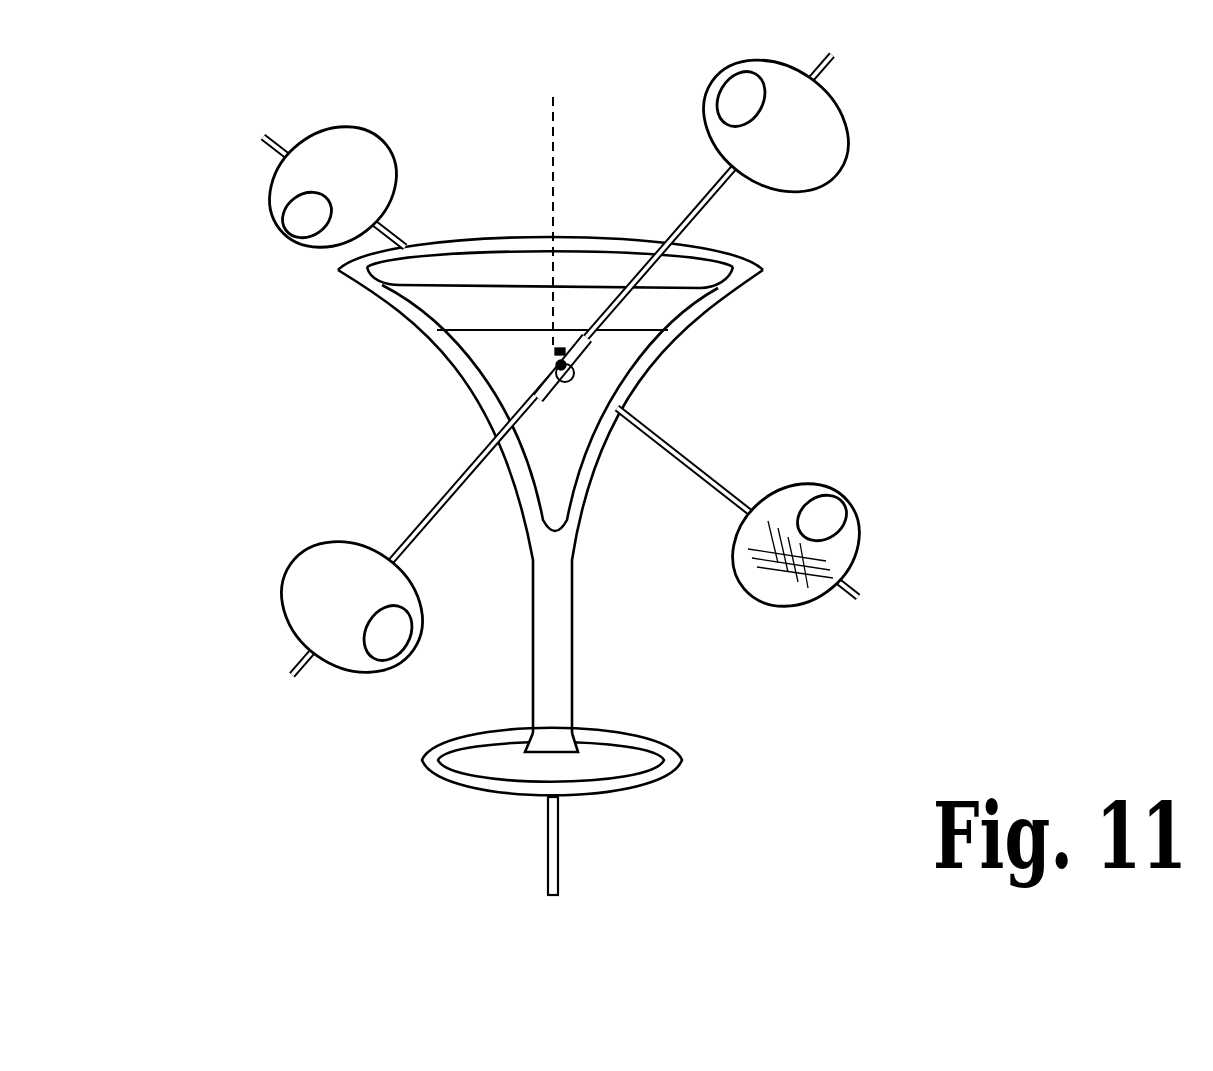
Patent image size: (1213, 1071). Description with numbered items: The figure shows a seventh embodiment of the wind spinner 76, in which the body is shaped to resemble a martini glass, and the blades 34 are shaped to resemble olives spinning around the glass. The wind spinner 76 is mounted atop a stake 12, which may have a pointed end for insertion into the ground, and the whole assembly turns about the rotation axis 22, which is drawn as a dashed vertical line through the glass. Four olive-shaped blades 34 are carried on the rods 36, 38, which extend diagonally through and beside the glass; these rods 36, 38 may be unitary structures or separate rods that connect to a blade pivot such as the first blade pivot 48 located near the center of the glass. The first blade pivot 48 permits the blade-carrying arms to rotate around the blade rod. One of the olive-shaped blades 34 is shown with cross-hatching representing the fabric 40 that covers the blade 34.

The stake 12 is at (560, 867).
The rotation axis 22 is at (547, 117).
The blade 34 is at (268, 197).
The rod 36 is at (693, 198).
The rod 38 is at (692, 477).
The fabric 40 is at (782, 580).
The first blade pivot 48 is at (577, 363).
The wind spinner 76 is at (305, 393).